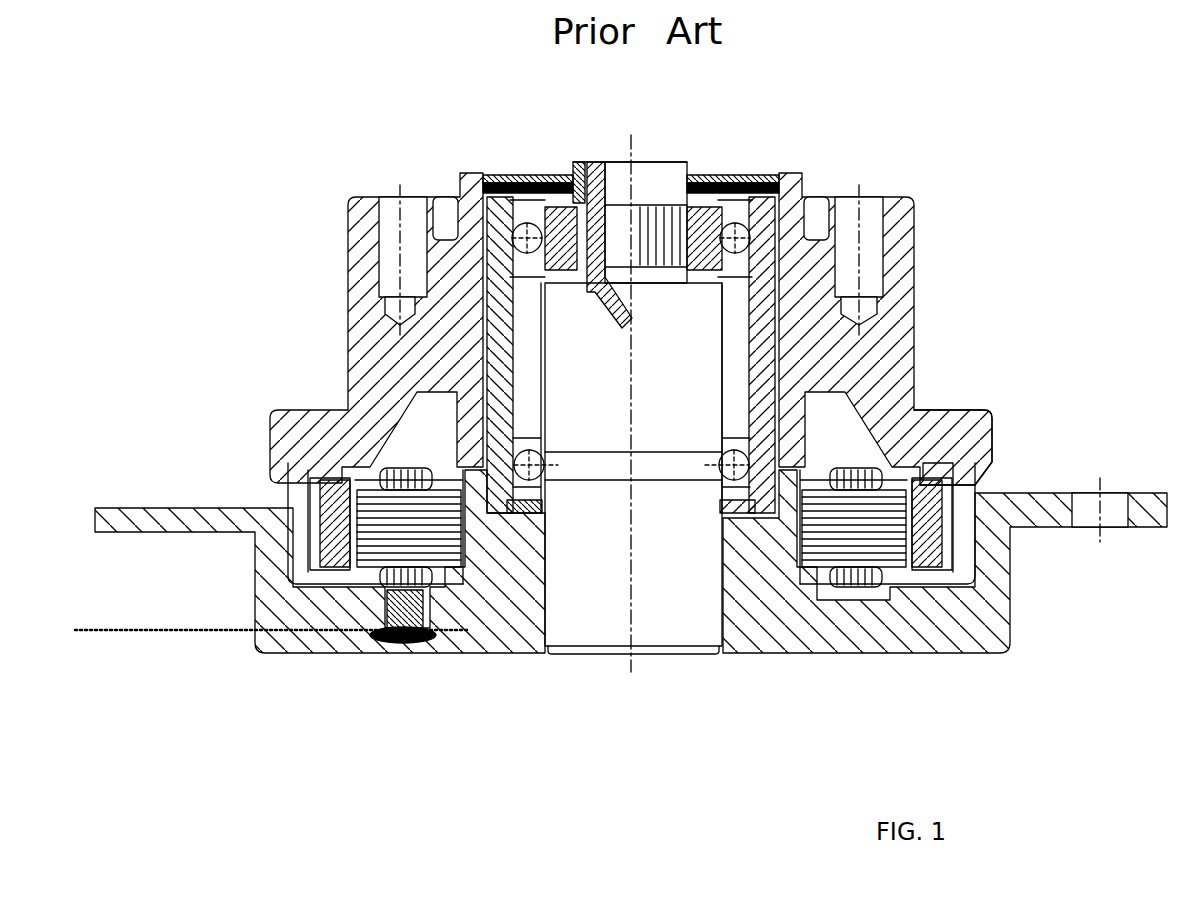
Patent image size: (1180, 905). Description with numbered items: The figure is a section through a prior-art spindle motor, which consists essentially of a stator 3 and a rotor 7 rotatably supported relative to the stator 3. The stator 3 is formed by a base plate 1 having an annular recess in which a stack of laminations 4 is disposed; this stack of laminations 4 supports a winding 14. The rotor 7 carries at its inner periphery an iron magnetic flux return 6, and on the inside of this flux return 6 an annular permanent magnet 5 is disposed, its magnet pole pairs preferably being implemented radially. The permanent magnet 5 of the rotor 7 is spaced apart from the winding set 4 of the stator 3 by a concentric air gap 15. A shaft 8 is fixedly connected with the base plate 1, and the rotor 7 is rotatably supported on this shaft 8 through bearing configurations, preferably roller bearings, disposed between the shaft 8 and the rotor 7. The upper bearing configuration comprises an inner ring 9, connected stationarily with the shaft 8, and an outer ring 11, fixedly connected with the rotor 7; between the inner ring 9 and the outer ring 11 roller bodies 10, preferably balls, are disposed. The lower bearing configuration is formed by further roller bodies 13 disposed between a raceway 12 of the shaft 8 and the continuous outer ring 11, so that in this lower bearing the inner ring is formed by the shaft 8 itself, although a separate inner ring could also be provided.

The base plate 1 is at (497, 597).
The stator 3 is at (1013, 613).
The stack of laminations 4 is at (870, 537).
The annular permanent magnet 5 is at (930, 530).
The iron magnetic flux return 6 is at (950, 530).
The rotor 7 is at (920, 316).
The shaft 8 is at (677, 570).
The inner ring 9 is at (686, 200).
The roller bodies 10 is at (725, 213).
The outer ring 11 is at (767, 222).
The raceway 12 is at (602, 465).
The further roller bodies 13 is at (754, 515).
The winding 14 is at (857, 567).
The concentric air gap 15 is at (990, 460).